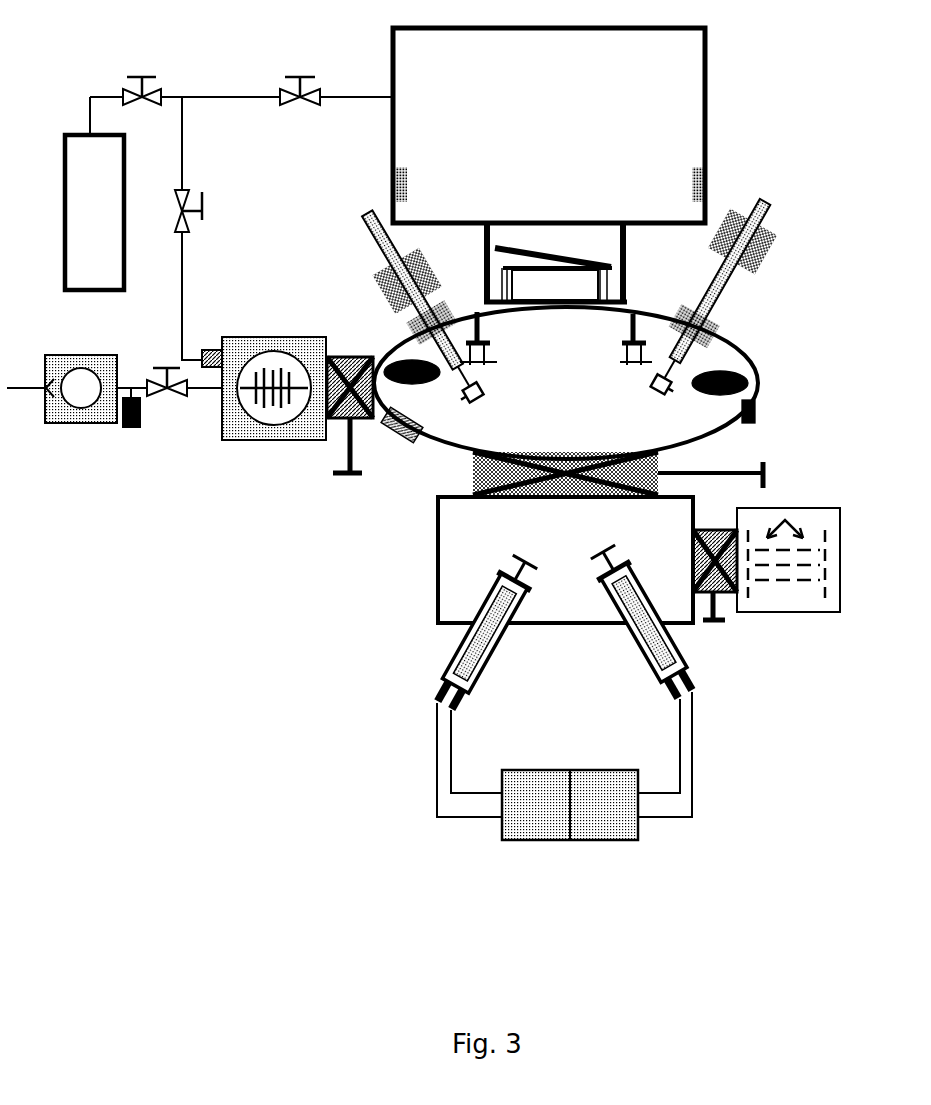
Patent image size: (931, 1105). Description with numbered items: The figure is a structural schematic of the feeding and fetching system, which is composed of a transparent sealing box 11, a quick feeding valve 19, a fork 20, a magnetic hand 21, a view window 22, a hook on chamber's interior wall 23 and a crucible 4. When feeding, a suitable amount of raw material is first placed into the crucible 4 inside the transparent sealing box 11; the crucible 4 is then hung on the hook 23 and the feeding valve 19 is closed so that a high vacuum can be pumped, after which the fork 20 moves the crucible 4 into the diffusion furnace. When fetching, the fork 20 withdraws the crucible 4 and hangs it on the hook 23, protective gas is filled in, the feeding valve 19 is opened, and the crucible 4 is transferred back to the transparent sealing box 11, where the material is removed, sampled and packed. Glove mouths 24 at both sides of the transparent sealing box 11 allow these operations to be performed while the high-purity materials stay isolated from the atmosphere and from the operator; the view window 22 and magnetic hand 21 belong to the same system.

The crucible 4 is at (497, 588).
The transparent sealing box 11 is at (632, 80).
The quick feeding valve 19 is at (590, 250).
The fork 20 is at (712, 300).
The magnetic hand 21 is at (787, 232).
The view window 22 is at (730, 368).
The hook on chamber's interior wall 23 is at (647, 333).
The glove mouth 24 is at (712, 177).